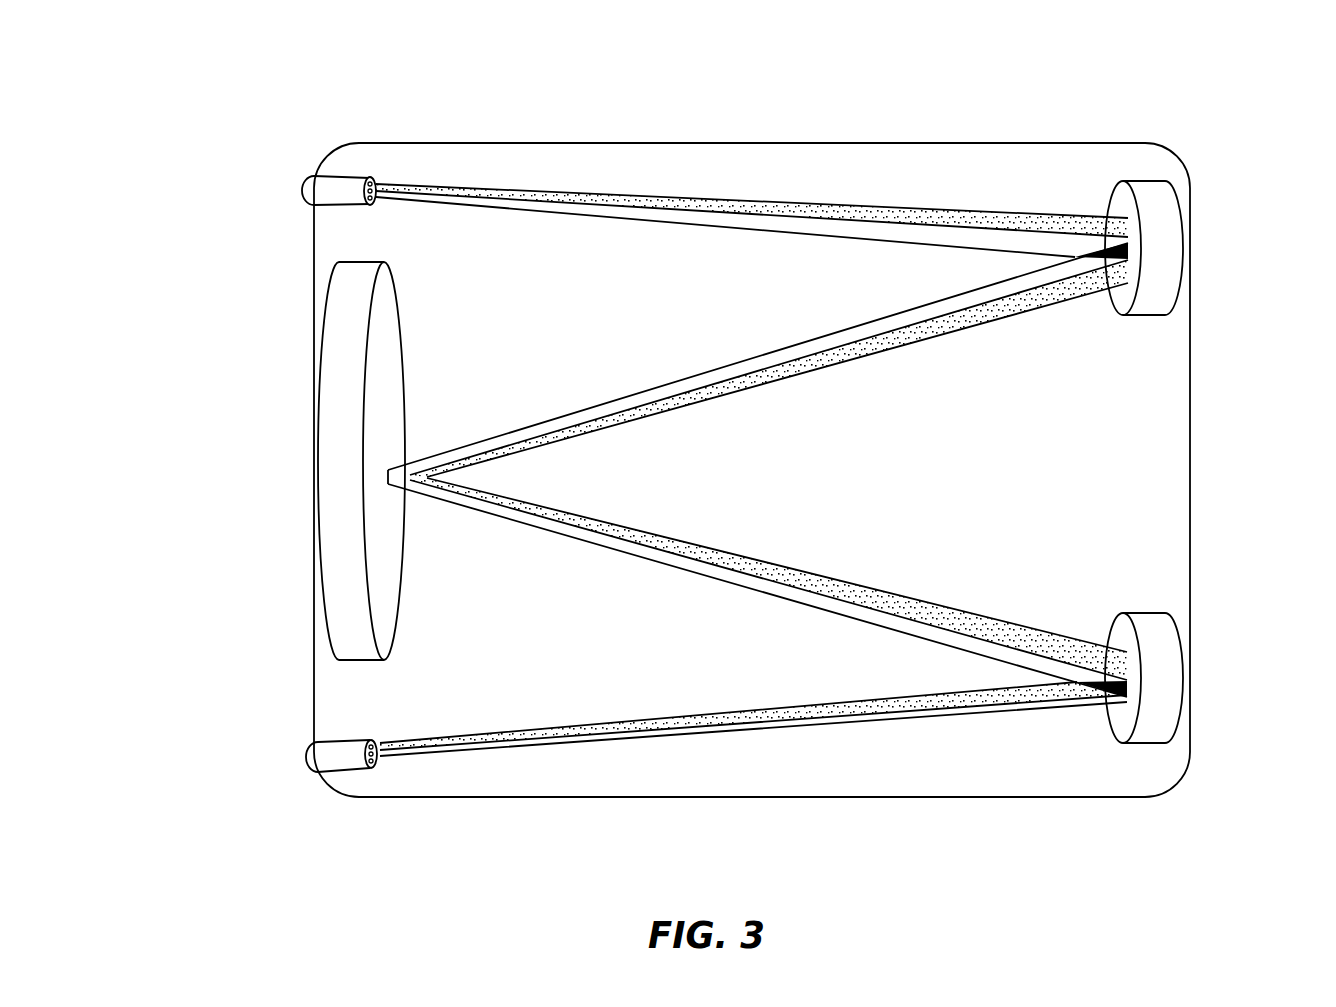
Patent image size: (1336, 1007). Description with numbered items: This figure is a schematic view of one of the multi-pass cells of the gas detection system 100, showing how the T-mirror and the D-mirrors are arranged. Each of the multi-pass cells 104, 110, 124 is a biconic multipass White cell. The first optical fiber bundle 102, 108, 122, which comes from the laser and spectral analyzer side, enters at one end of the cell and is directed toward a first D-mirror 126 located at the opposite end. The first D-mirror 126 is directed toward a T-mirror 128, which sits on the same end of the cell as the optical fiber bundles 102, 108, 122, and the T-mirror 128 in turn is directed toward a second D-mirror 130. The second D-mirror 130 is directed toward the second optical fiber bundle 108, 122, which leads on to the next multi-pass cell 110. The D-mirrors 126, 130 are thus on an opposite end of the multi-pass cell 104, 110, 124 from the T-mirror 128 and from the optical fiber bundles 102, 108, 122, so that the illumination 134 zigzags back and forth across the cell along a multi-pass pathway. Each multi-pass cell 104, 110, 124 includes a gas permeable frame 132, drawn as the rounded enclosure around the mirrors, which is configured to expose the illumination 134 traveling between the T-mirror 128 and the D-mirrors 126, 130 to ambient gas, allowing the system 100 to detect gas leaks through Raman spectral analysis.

The gas detection system 100 is at (143, 92).
The first optical fiber bundle 102 is at (310, 767).
The first multi-pass cell 104 is at (1253, 70).
The second optical fiber bundle 108 is at (310, 181).
The second multi-pass cell 110 is at (706, 457).
The optical fiber bundle 122 is at (317, 163).
The multi-pass cell 124 is at (706, 457).
The first D-mirror 126 is at (1175, 683).
The T-mirror 128 is at (333, 487).
The second D-mirror 130 is at (1175, 255).
The gas permeable frame 132 is at (1070, 797).
The illumination 134 is at (852, 593).